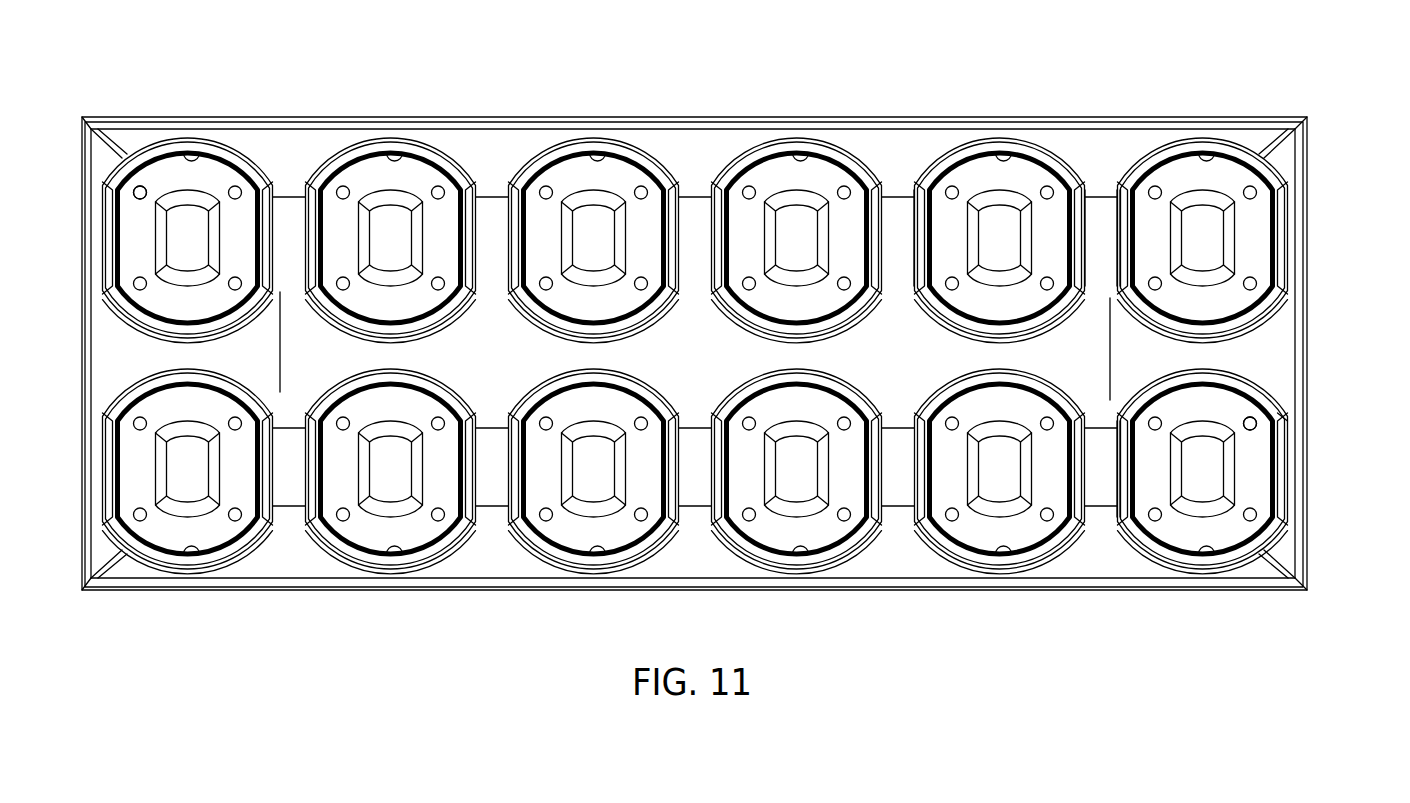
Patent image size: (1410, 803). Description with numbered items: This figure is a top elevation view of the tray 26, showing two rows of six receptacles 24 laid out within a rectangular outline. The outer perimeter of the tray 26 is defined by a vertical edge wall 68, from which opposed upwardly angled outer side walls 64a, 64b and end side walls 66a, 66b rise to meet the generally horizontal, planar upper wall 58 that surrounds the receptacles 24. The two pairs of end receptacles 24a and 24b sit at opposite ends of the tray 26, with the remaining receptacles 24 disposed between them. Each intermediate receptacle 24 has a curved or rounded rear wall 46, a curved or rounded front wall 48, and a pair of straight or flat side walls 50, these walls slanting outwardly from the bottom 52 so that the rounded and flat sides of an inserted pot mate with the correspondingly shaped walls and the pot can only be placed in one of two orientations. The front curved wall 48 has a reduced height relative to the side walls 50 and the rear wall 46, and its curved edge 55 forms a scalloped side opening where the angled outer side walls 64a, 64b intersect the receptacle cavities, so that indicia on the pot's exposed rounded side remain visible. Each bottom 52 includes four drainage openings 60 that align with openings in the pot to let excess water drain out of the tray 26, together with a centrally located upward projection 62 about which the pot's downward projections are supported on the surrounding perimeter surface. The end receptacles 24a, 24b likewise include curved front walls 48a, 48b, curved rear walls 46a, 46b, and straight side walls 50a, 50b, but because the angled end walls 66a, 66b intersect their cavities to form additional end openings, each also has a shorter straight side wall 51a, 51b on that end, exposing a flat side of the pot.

The receptacle 24 is at (967, 178).
The end receptacle 24a is at (1253, 215).
The end receptacle 24b is at (243, 218).
The tray 26 is at (1335, 460).
The rear curved wall 46 is at (943, 317).
The curved rear wall 46a is at (1133, 305).
The curved rear wall 46b is at (1150, 392).
The front curved wall 48 is at (207, 158).
The curved front wall 48a is at (1217, 157).
The curved front wall 48b is at (1180, 558).
The straight side wall 50 is at (385, 158).
The straight side wall 50a is at (1122, 238).
The straight side wall 50b is at (1127, 545).
The shorter straight side wall 51a is at (1262, 257).
The shorter straight side wall 51b is at (120, 247).
The bottom 52 is at (588, 157).
The curved edge 55 is at (782, 563).
The upper wall 58 is at (682, 365).
The drainage opening 60 is at (1267, 413).
The upward projection 62 is at (177, 249).
The outer side wall 64a is at (1080, 565).
The outer side wall 64b is at (1102, 145).
The end side wall 66a is at (1283, 342).
The end side wall 66b is at (106, 363).
The vertical edge wall 68 is at (80, 148).